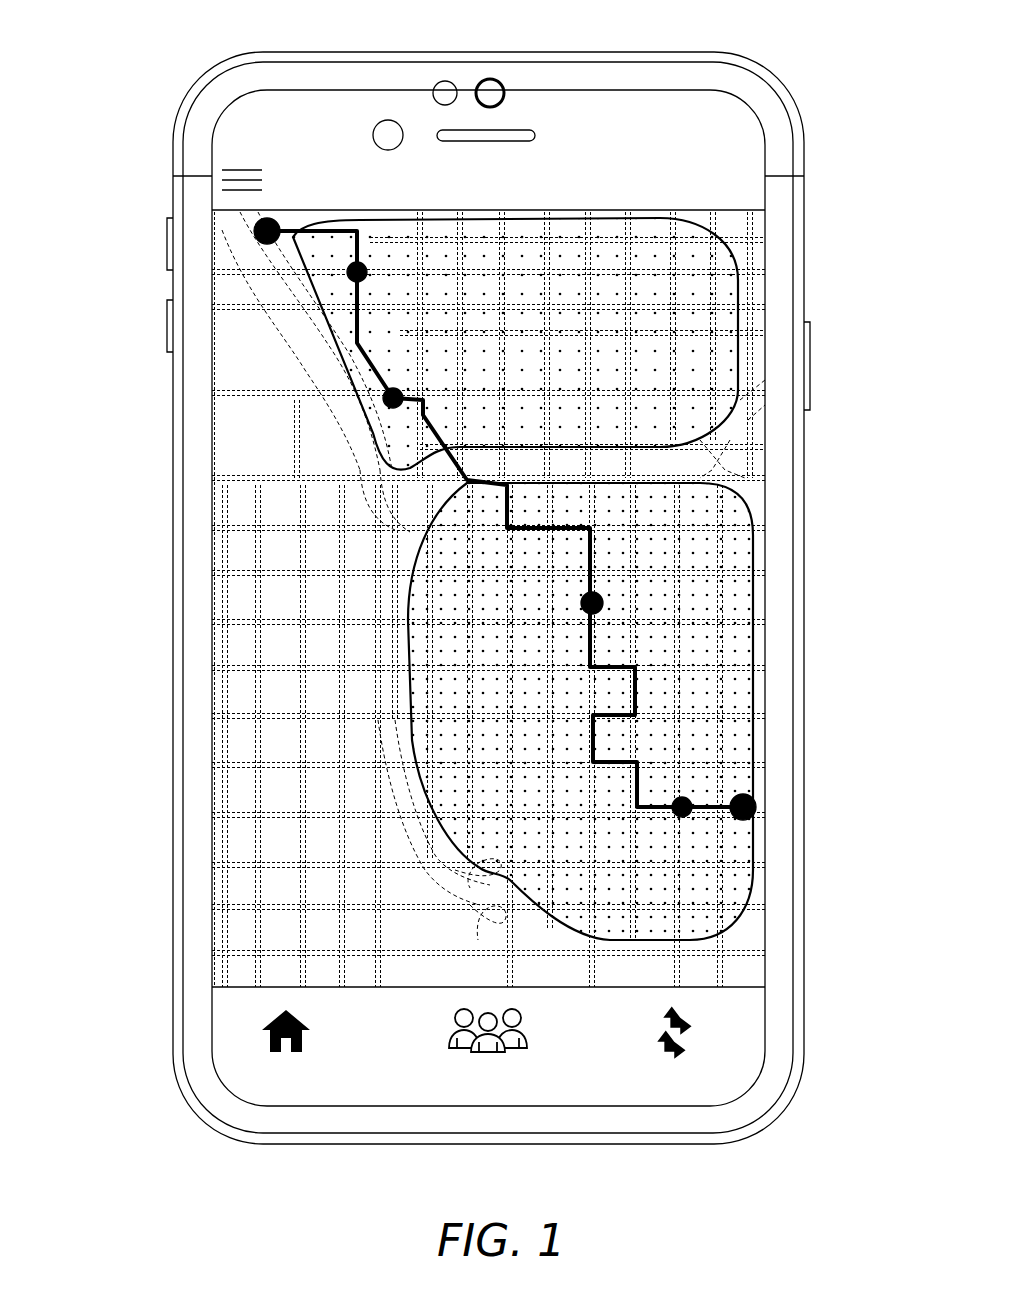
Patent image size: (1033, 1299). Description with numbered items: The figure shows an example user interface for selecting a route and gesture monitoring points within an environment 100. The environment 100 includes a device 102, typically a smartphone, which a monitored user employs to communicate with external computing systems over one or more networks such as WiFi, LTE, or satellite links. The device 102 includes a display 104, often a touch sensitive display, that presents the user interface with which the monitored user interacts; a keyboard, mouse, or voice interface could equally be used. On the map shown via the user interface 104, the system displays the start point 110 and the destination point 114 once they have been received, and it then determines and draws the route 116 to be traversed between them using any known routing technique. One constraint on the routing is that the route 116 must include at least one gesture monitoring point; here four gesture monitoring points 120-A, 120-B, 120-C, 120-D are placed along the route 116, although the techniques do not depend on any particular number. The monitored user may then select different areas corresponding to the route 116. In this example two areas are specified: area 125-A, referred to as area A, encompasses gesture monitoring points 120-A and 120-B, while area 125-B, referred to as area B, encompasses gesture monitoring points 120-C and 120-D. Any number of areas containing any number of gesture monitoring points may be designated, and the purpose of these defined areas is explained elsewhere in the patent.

The environment 100 is at (86, 31).
The device 102 is at (487, 47).
The display 104 is at (638, 210).
The start point 110 is at (752, 803).
The destination point 114 is at (260, 229).
The route 116 is at (360, 338).
The gesture monitoring point 120-A is at (690, 800).
The gesture monitoring point 120-B is at (603, 603).
The gesture monitoring point 120-C is at (385, 402).
The gesture monitoring point 120-D is at (362, 266).
The area 125-A is at (758, 538).
The area 125-B is at (742, 315).